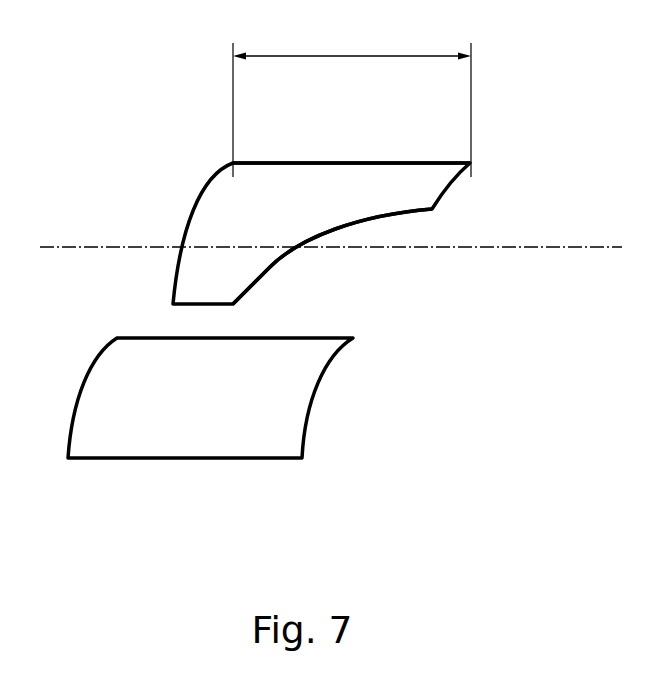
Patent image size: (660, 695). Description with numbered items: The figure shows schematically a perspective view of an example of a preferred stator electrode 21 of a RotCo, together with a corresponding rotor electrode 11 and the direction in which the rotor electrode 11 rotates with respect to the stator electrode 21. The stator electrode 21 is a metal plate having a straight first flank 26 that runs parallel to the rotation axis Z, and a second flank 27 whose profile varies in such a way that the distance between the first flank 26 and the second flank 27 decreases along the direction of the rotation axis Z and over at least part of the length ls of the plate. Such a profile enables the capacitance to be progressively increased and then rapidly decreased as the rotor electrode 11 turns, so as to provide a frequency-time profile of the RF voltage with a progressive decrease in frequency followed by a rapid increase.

The rotor electrode 11 is at (209, 447).
The stator electrode 21 is at (220, 210).
The first flank 26 is at (338, 163).
The second flank 27 is at (277, 260).
The rotation axis Z is at (552, 246).
The length of the plate ls is at (352, 100).